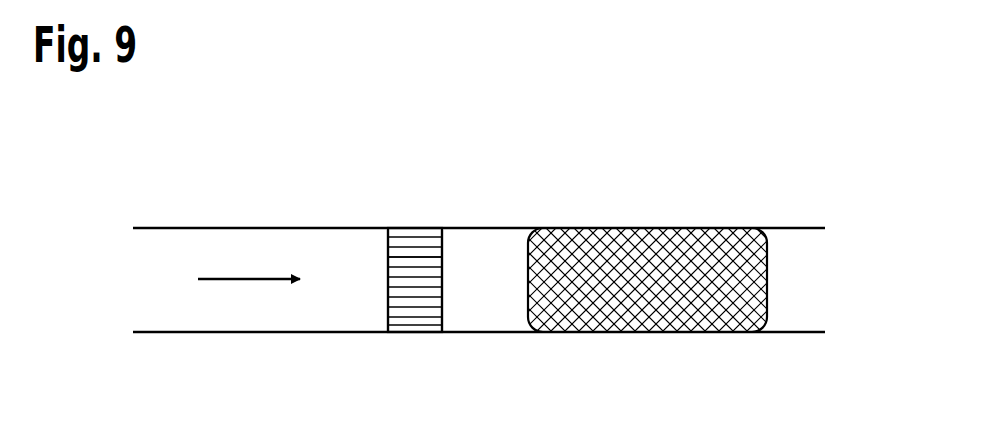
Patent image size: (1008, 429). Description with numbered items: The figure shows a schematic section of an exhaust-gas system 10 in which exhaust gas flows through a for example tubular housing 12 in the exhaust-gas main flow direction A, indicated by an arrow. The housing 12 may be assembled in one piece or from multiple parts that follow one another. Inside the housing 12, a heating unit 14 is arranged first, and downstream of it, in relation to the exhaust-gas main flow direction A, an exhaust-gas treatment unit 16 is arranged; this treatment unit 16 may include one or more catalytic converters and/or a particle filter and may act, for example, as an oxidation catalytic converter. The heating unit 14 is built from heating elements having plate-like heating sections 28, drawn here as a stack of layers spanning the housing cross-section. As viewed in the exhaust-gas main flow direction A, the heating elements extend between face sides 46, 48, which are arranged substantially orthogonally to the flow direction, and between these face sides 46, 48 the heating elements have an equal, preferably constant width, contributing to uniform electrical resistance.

The exhaust-gas system 10 is at (790, 167).
The tubular housing 12 is at (222, 333).
The heating unit 14 is at (402, 218).
The exhaust-gas treatment unit 16 is at (655, 218).
The heating sections 28 is at (423, 256).
The face side 46 is at (388, 295).
The face side 48 is at (443, 295).
The exhaust-gas main flow direction A is at (250, 278).